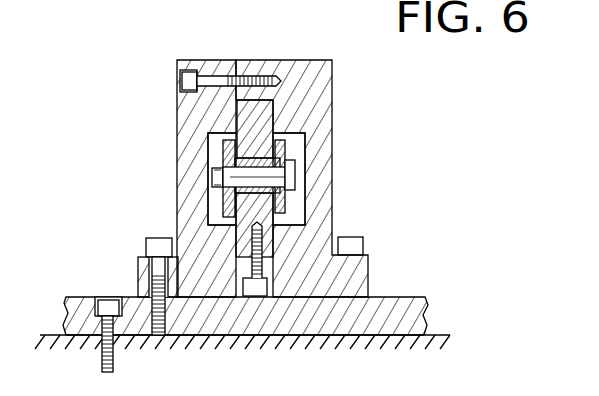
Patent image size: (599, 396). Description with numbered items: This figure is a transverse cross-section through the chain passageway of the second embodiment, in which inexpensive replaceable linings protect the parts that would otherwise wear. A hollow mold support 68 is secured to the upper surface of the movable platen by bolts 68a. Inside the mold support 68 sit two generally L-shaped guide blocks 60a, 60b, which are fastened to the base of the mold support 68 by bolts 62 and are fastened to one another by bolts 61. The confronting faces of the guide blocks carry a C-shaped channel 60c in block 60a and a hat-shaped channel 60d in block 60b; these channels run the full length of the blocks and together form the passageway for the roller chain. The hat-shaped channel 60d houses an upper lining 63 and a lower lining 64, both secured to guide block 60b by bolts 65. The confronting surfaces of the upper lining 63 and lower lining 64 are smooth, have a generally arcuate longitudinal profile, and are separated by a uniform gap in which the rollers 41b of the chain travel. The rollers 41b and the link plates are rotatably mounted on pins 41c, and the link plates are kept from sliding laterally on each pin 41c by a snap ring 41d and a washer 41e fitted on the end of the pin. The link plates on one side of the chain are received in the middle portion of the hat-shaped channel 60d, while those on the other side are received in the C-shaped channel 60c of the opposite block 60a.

The guide block 60a is at (200, 60).
The guide block 60b is at (307, 60).
The C-shaped channel 60c is at (292, 133).
The hat-shaped channel 60d is at (236, 212).
The bolts 61 is at (180, 79).
The bolts 62 is at (146, 242).
The upper lining 63 is at (266, 108).
The lower lining 64 is at (275, 233).
The bolts 65 is at (256, 296).
The mold support 68 is at (412, 295).
The bolts 68a is at (104, 300).
The rollers 41b is at (283, 165).
The pins 41c is at (295, 183).
The snap ring 41d is at (213, 168).
The washer 41e is at (224, 158).